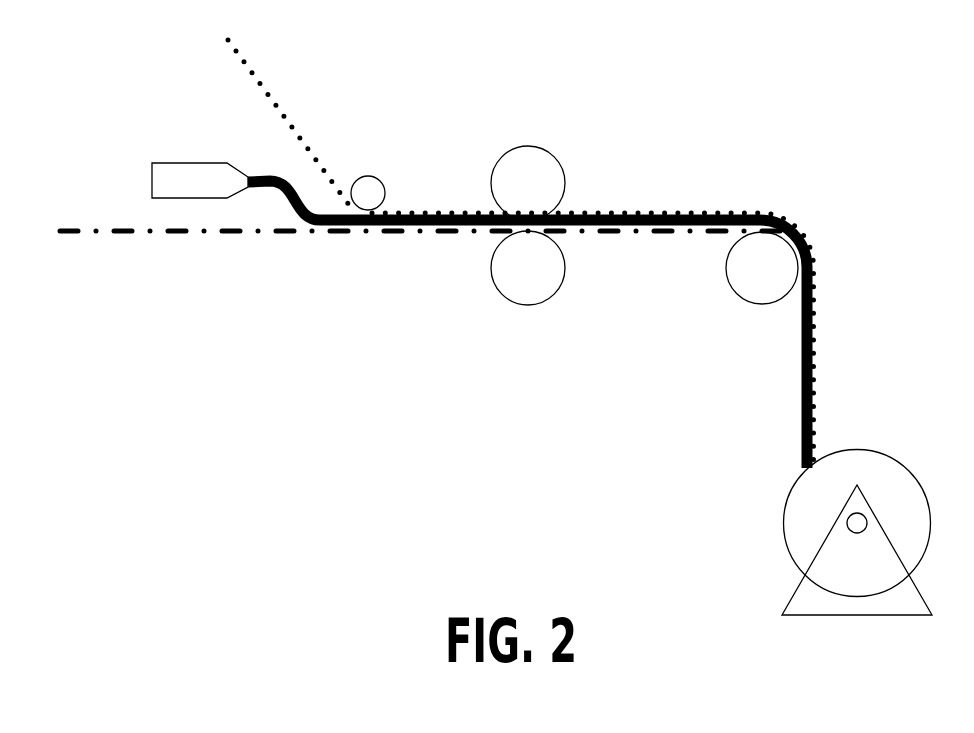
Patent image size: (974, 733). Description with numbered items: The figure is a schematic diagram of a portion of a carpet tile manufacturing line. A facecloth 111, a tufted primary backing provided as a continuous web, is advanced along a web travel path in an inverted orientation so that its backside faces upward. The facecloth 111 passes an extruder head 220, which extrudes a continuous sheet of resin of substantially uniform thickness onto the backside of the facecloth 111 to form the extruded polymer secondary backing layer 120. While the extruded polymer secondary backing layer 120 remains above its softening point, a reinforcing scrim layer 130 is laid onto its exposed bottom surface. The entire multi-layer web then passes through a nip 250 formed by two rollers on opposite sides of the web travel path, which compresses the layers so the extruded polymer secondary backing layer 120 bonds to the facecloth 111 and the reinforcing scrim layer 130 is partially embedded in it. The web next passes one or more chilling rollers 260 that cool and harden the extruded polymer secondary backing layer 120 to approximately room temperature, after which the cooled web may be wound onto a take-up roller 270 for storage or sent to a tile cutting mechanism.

The facecloth 111 is at (125, 233).
The extruded polymer secondary backing layer 120 is at (282, 177).
The reinforcing scrim layer 130 is at (260, 85).
The extruder head 220 is at (207, 163).
The nip 250 is at (500, 315).
The chilling roller 260 is at (735, 298).
The take-up roller 270 is at (785, 517).